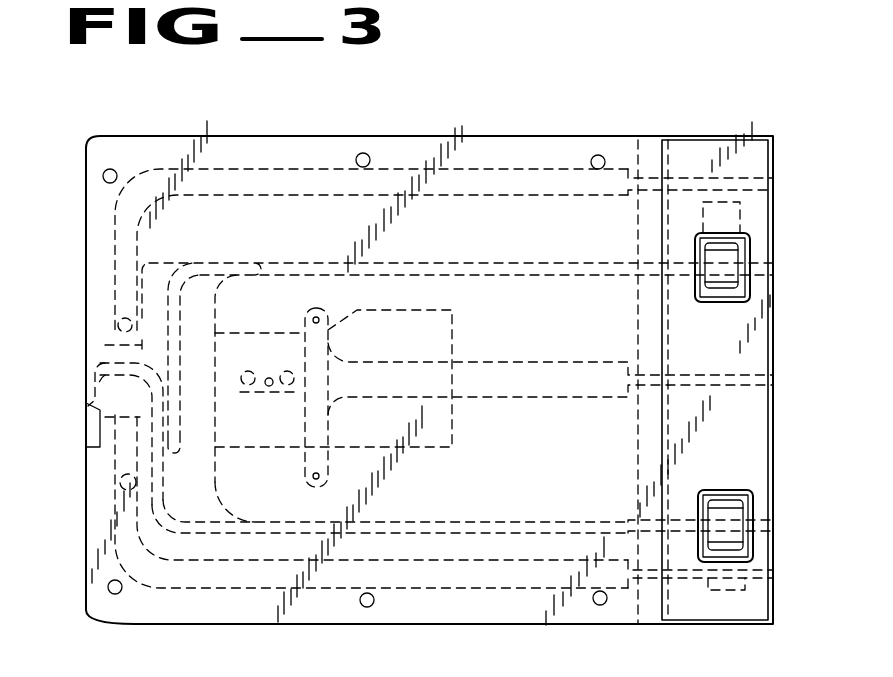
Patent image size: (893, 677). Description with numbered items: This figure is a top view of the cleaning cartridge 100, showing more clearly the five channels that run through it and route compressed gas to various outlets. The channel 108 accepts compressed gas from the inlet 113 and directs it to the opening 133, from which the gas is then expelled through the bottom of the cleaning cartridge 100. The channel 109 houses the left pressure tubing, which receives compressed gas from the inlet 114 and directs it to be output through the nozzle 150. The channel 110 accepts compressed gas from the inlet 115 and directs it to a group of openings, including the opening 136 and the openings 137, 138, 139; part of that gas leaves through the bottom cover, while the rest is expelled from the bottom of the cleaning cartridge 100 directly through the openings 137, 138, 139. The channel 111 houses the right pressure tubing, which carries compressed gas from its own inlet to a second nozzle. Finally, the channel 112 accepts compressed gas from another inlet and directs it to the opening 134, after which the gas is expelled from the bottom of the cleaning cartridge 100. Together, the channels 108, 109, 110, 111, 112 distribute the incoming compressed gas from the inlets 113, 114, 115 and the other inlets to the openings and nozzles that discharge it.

The cleaning cartridge 100 is at (243, 135).
The channel 108 is at (426, 582).
The channel 109 is at (455, 522).
The channel 110 is at (560, 378).
The channel 111 is at (536, 268).
The channel 112 is at (518, 186).
The inlet 113 is at (768, 578).
The inlet 114 is at (768, 521).
The inlet 115 is at (768, 377).
The opening 133 is at (128, 483).
The opening 134 is at (118, 322).
The opening 136 is at (316, 316).
The opening 137 is at (248, 372).
The opening 138 is at (269, 388).
The opening 139 is at (287, 372).
The nozzle 150 is at (105, 378).